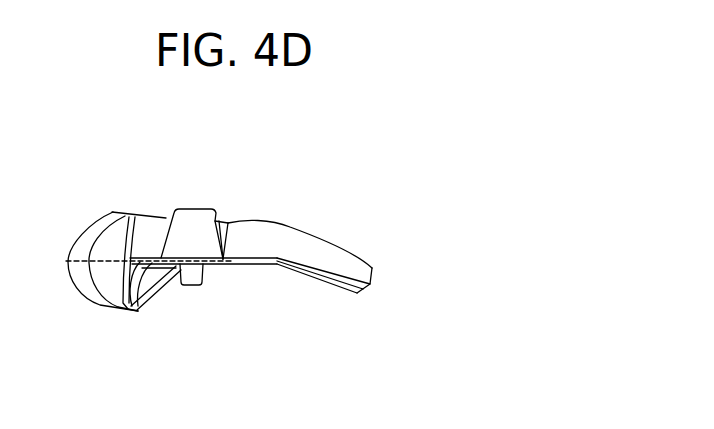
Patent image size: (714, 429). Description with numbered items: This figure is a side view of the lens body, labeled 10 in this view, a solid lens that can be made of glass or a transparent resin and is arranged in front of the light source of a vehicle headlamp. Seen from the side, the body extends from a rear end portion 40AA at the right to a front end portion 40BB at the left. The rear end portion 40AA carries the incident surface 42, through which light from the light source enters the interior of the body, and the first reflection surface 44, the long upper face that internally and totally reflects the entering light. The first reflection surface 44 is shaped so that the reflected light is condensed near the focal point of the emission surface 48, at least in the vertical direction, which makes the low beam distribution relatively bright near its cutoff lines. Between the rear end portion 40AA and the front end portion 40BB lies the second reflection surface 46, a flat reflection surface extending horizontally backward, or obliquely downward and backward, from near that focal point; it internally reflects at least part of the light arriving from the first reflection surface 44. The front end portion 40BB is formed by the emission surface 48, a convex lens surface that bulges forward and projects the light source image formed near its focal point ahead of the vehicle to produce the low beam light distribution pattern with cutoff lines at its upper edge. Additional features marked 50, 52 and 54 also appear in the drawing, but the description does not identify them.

The wiper blade (device) 10 is at (222, 172).
The front end portion 40BB is at (84, 208).
The rear end portion 40AA is at (385, 233).
The emission surface 48 is at (80, 247).
The block 54 is at (188, 222).
The inner bracket 50 is at (158, 293).
The first reflection surface 44 is at (307, 228).
The second reflection surface 46 is at (237, 263).
The inclined portion 52 is at (303, 273).
The incident surface 42 is at (369, 288).